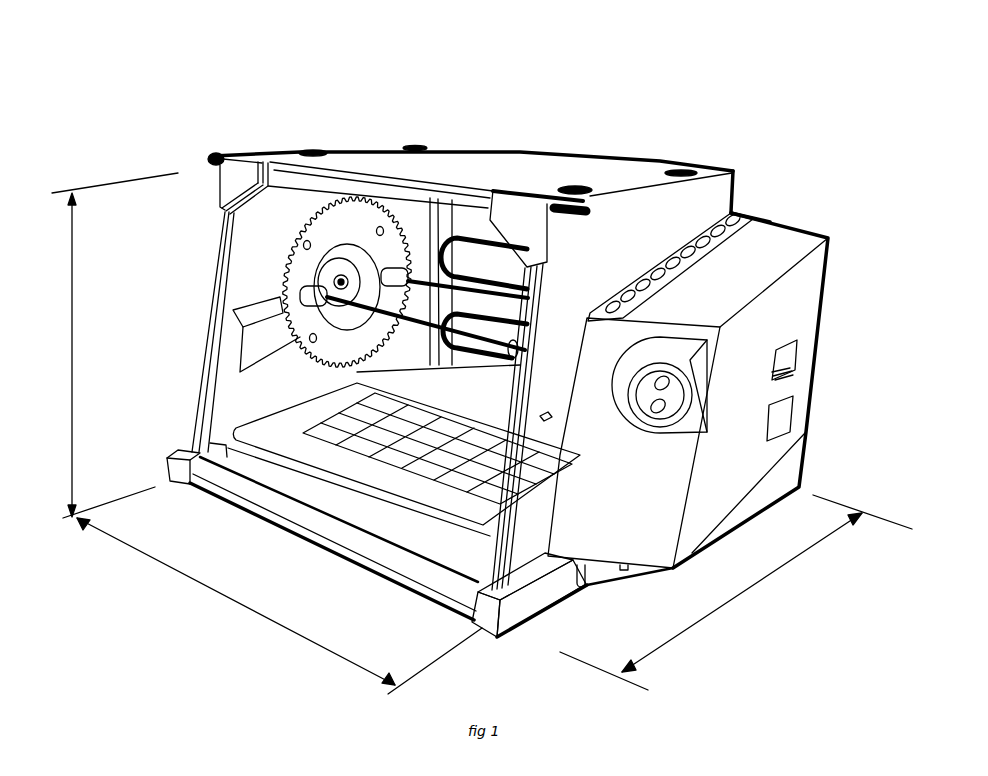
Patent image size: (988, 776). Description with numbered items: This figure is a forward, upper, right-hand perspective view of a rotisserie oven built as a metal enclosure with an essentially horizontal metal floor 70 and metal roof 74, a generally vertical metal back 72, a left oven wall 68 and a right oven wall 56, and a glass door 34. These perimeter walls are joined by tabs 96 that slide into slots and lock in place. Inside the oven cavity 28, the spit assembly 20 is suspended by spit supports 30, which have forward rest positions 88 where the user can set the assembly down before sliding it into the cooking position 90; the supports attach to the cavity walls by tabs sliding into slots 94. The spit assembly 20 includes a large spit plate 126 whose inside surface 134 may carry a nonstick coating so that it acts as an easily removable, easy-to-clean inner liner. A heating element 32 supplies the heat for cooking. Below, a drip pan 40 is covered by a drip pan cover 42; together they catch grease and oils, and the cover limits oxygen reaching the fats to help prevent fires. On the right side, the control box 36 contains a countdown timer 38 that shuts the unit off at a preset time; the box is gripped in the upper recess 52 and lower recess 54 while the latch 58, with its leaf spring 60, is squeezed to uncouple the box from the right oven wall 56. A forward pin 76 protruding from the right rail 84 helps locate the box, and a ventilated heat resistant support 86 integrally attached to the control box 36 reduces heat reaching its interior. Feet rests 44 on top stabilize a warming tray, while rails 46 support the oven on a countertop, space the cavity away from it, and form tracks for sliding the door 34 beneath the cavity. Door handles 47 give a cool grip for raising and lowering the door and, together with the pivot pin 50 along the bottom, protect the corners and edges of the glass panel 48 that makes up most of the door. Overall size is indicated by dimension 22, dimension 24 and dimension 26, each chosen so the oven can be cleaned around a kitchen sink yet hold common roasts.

The spit assembly 20 is at (300, 262).
The dimension 22 is at (220, 593).
The dimension 24 is at (742, 595).
The dimension 26 is at (72, 343).
The oven cavity 28 is at (257, 157).
The spit supports 30 is at (232, 323).
The heating element 32 is at (461, 230).
The glass door 34 is at (230, 280).
The control box 36 is at (781, 235).
The countdown timer 38 is at (678, 402).
The drip pan 40 is at (408, 497).
The drip pan cover 42 is at (450, 497).
The feet rests 44 is at (300, 153).
The rails 46 is at (187, 455).
The door handles 47 is at (222, 180).
The glass panel 48 is at (200, 383).
The pivot pin 50 is at (287, 527).
The upper recess 52 is at (788, 355).
The lower recess 54 is at (782, 412).
The right oven wall 56 is at (690, 207).
The latch 58 is at (793, 377).
The leaf spring 60 is at (793, 373).
The left oven wall 68 is at (225, 407).
The metal floor 70 is at (367, 510).
The metal back 72 is at (455, 213).
The metal roof 74 is at (547, 413).
The forward pin 76 is at (622, 571).
The right rail 84 is at (517, 607).
The ventilated heat resistant support 86 is at (703, 260).
The forward rest positions 88 is at (237, 318).
The cooking position 90 is at (339, 281).
The slots 94 is at (661, 160).
The tabs 96 is at (210, 462).
The spit plate 126 is at (337, 230).
The inside surface 134 is at (352, 222).